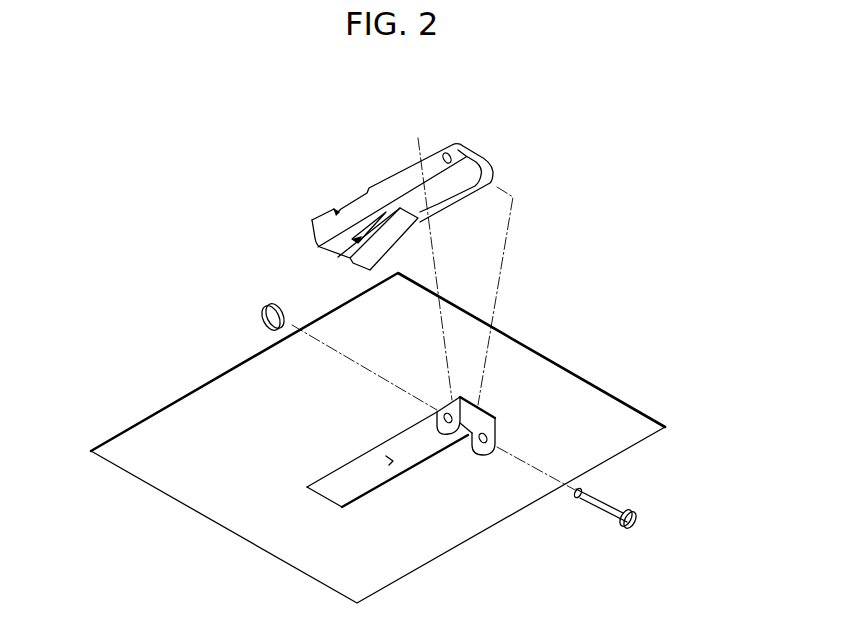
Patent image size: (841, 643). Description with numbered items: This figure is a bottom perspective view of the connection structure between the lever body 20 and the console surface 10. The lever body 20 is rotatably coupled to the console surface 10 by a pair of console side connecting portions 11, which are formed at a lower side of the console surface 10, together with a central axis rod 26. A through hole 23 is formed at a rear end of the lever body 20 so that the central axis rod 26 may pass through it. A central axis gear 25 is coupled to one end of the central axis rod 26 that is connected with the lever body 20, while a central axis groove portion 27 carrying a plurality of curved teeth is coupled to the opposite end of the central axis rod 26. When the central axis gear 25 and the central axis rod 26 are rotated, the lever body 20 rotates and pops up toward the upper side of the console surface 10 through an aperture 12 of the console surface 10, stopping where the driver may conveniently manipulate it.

The console surface 10 is at (178, 433).
The console side connecting portions 11 is at (478, 450).
The aperture 12 is at (393, 461).
The lever body 20 is at (398, 177).
The through hole 23 is at (447, 152).
The central axis gear 25 is at (635, 525).
The central axis rod 26 is at (608, 508).
The central axis groove portion 27 is at (265, 313).